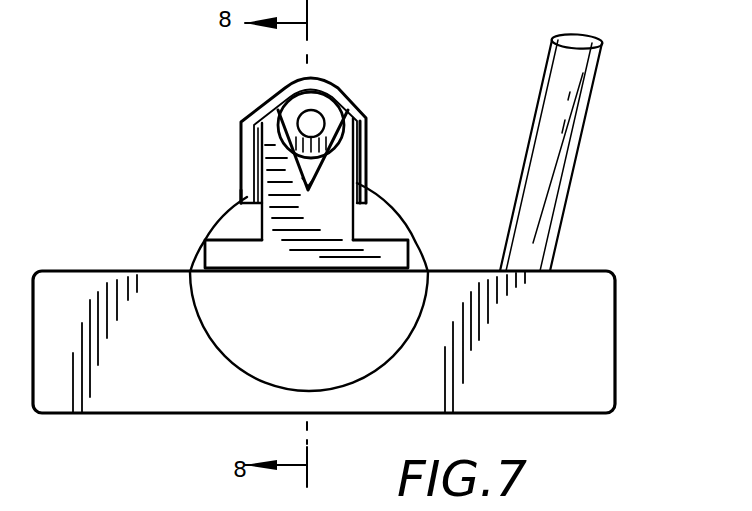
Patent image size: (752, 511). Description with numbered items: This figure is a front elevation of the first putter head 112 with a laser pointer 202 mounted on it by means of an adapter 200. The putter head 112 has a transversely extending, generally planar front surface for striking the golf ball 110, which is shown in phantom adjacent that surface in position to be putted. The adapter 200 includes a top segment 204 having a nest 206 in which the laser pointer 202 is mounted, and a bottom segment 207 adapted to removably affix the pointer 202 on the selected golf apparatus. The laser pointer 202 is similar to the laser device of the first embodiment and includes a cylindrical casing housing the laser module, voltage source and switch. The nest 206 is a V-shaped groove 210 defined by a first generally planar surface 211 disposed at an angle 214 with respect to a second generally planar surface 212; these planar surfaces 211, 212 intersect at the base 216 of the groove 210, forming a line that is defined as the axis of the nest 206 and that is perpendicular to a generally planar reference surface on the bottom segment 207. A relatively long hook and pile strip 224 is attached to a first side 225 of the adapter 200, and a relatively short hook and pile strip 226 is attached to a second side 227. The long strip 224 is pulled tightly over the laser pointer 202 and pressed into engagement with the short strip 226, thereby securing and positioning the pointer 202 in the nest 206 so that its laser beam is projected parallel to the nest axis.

The golf ball 110 is at (197, 332).
The first putter head 112 is at (614, 361).
The adapter 200 is at (331, 75).
The laser pointer 202 is at (284, 92).
The top segment 204 is at (277, 138).
The nest 206 is at (283, 117).
The bottom segment 207 is at (346, 243).
The V-shaped groove 210 is at (318, 166).
The first generally planar surface 211 is at (363, 145).
The second generally planar surface 212 is at (262, 162).
The angle 214 is at (322, 172).
The base of the groove 216 is at (245, 197).
The long hook and pile strip 224 is at (346, 103).
The first side 225 is at (355, 222).
The short hook and pile strip 226 is at (258, 143).
The second side 227 is at (258, 224).